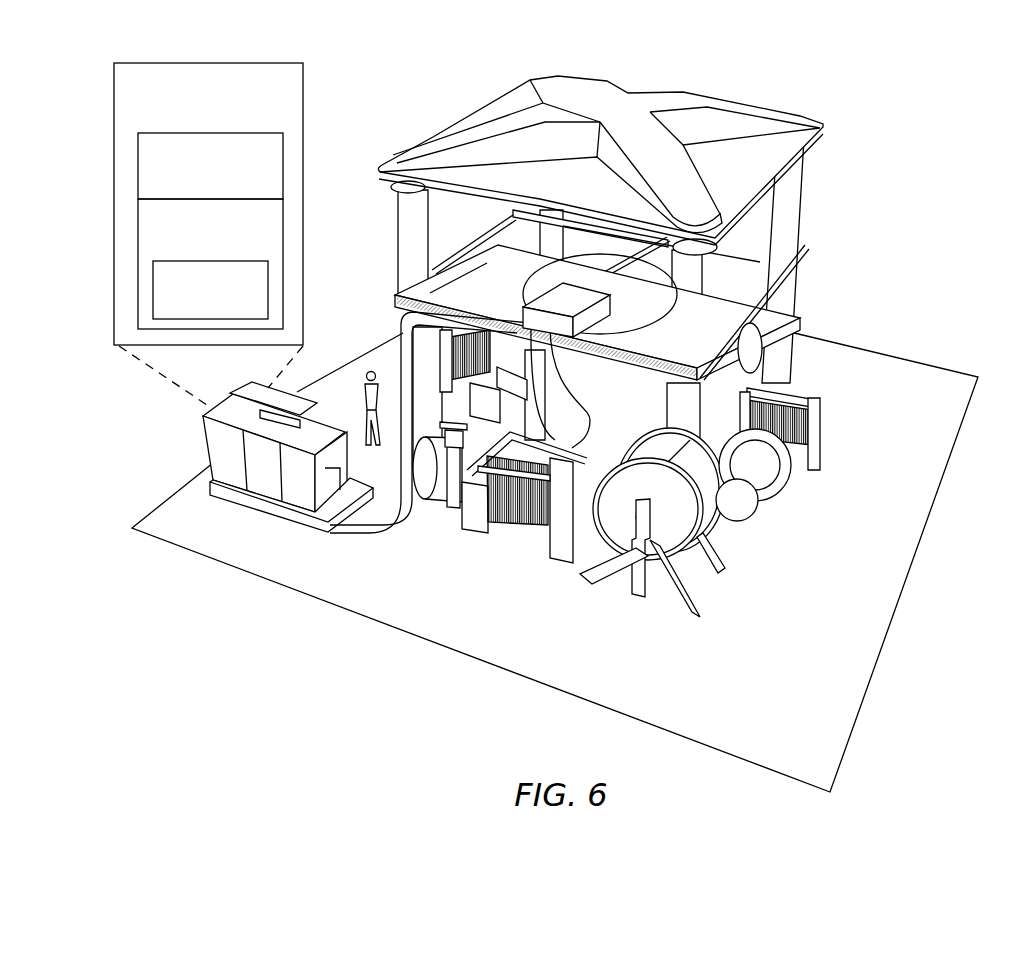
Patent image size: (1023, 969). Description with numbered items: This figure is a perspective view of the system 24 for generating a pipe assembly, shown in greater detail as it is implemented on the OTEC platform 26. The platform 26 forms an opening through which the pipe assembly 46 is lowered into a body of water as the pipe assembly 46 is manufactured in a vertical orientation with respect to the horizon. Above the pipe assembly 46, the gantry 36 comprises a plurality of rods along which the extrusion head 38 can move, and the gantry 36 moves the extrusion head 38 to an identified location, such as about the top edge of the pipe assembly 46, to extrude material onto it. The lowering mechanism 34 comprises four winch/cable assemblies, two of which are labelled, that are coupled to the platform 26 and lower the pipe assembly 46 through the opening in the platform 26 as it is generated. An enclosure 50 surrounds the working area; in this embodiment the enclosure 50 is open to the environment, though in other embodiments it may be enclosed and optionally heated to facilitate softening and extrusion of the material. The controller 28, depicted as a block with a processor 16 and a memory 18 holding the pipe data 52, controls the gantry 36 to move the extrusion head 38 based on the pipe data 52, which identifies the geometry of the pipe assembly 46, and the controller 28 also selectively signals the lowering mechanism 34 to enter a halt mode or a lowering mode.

The system 24 is at (609, 277).
The OTEC platform 26 is at (910, 472).
The controller 28 is at (201, 116).
The processor 16 is at (201, 187).
The memory 18 is at (201, 252).
The pipe data 52 is at (201, 309).
The lowering mechanism 34 is at (510, 500).
The gantry 36 is at (633, 263).
The extrusion head 38 is at (587, 305).
The pipe assembly 46 is at (606, 407).
The enclosure 50 is at (633, 110).